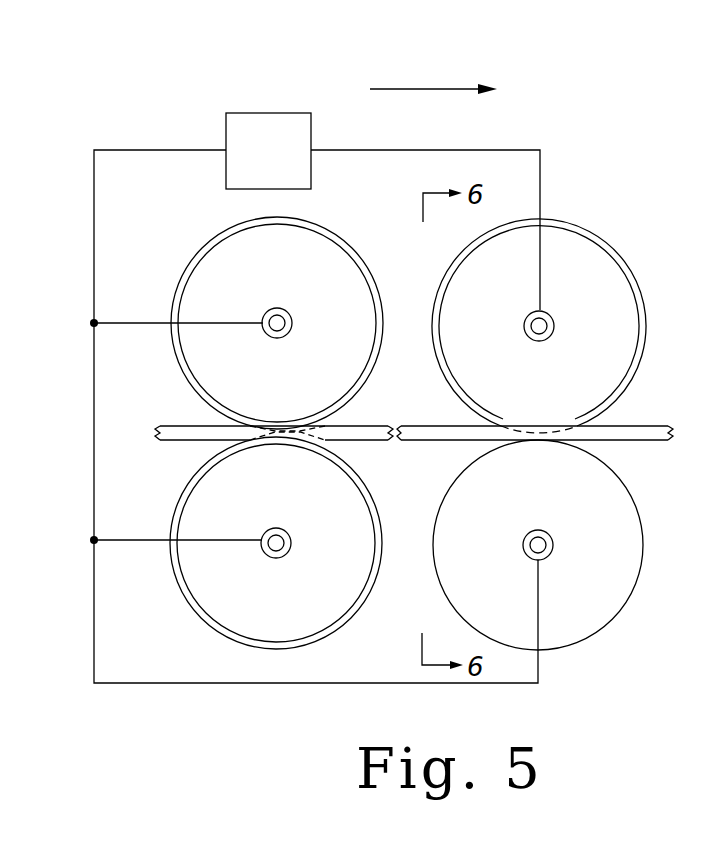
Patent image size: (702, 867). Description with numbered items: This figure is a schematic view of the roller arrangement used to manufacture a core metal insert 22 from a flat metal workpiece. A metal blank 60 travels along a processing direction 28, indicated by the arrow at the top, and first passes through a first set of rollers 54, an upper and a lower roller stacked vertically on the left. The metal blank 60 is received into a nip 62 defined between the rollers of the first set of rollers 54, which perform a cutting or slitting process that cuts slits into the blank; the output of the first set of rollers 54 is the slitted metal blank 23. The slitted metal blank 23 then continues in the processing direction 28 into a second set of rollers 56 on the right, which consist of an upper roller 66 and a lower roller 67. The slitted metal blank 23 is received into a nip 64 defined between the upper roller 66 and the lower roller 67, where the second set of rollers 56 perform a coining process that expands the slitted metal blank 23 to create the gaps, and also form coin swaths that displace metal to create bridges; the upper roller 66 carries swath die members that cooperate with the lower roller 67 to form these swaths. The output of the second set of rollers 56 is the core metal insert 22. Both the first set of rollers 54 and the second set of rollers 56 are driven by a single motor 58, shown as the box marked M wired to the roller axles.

The core metal insert 22 is at (425, 457).
The slitted metal blank 23 is at (373, 432).
The processing direction 28 is at (432, 88).
The first set of rollers 54 is at (268, 489).
The second set of rollers 56 is at (557, 406).
The motor 58 is at (266, 113).
The metal blank 60 is at (175, 432).
The nip 62 is at (370, 410).
The nip 64 is at (625, 410).
The upper roller 66 is at (617, 249).
The lower roller 67 is at (590, 637).